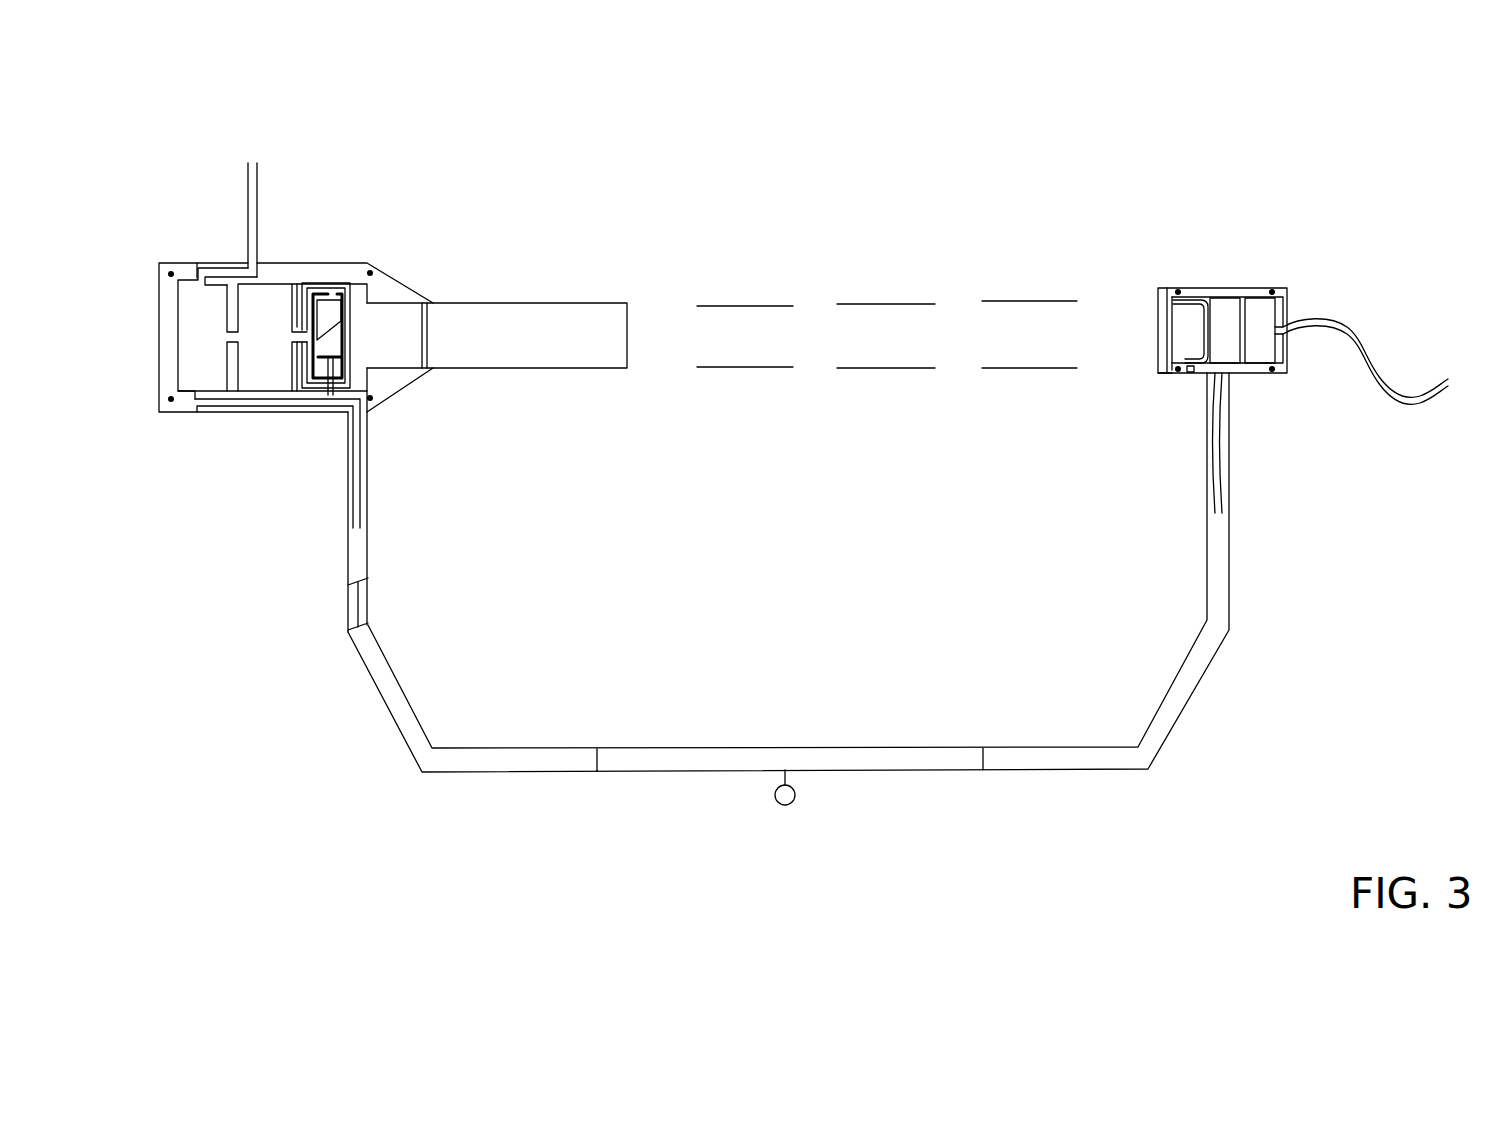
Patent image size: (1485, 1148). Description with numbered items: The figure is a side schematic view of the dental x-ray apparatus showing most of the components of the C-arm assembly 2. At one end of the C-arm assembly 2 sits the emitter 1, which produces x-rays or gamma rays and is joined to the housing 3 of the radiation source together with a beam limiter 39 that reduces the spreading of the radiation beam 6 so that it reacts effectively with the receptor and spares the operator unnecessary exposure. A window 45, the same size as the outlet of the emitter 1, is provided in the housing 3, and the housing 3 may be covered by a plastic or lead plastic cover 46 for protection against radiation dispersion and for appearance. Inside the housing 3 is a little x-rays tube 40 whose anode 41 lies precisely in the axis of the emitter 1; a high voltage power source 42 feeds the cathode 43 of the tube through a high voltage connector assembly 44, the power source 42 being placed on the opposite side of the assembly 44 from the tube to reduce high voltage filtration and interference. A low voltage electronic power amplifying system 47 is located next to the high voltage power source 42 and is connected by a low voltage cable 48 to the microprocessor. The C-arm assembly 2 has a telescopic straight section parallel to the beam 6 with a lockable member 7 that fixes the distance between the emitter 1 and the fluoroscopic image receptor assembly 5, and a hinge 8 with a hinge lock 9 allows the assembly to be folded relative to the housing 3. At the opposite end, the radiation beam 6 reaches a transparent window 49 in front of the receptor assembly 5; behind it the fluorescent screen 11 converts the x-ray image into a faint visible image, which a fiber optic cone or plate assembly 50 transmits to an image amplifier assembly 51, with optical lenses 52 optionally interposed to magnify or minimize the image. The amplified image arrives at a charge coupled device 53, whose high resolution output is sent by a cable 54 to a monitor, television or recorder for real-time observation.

The emitter 1 is at (512, 333).
The C-arm assembly 2 is at (390, 695).
The housing 3 is at (372, 278).
The fluoroscopic image receptor assembly 5 is at (1192, 286).
The radiation beam 6 is at (893, 323).
The lockable member 7 is at (785, 815).
The hinge 8 is at (343, 612).
The hinge lock 9 is at (358, 600).
The fluorescent screen 11 is at (1168, 377).
The beam limiter 39 is at (432, 318).
The x-rays tube 40 is at (342, 293).
The anode 41 is at (332, 315).
The high voltage power source 42 is at (265, 358).
The cathode 43 is at (330, 395).
The high voltage connector assembly 44 is at (296, 327).
The window 45 is at (371, 328).
The cover 46 is at (275, 258).
The low voltage electronic power amplifying system 47 is at (187, 358).
The low voltage cable 48 is at (252, 198).
The transparent window 49 is at (1163, 295).
The fiber optic cone or plate assembly 50 is at (1193, 377).
The image amplifier assembly 51 is at (1227, 308).
The optical lenses 52 is at (1208, 337).
The charge coupled device 53 is at (1265, 308).
The cable 54 is at (1388, 385).